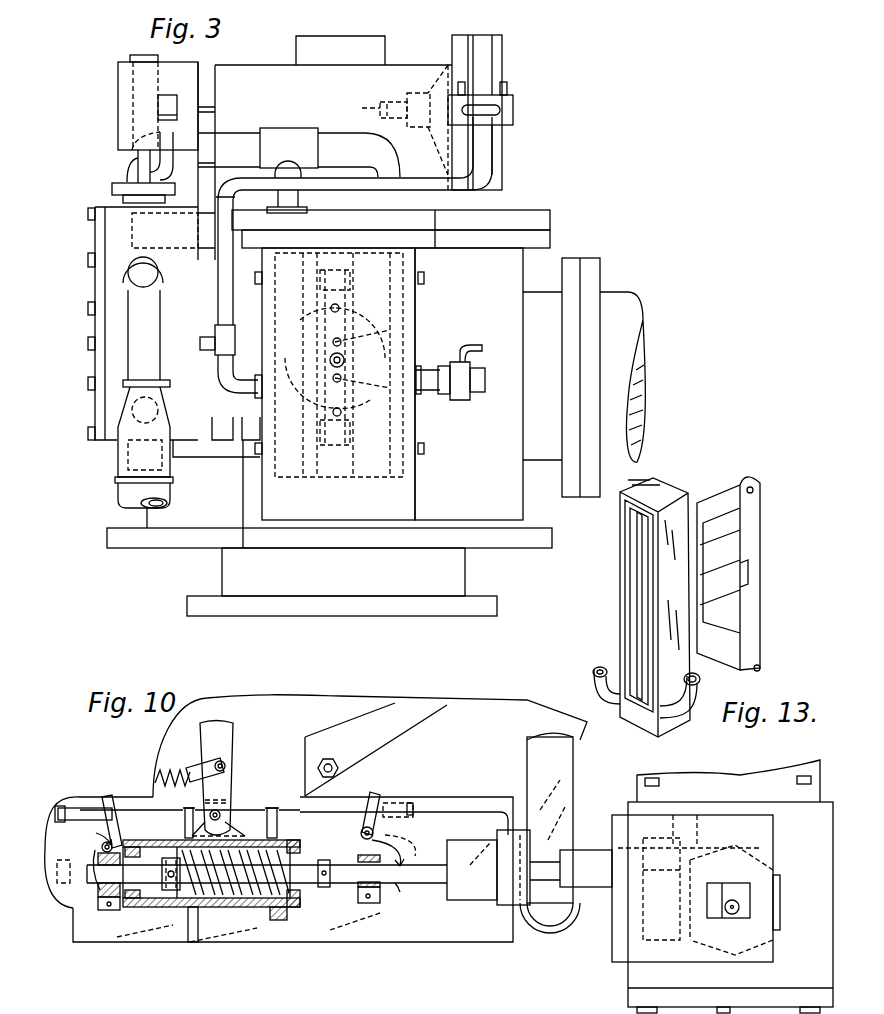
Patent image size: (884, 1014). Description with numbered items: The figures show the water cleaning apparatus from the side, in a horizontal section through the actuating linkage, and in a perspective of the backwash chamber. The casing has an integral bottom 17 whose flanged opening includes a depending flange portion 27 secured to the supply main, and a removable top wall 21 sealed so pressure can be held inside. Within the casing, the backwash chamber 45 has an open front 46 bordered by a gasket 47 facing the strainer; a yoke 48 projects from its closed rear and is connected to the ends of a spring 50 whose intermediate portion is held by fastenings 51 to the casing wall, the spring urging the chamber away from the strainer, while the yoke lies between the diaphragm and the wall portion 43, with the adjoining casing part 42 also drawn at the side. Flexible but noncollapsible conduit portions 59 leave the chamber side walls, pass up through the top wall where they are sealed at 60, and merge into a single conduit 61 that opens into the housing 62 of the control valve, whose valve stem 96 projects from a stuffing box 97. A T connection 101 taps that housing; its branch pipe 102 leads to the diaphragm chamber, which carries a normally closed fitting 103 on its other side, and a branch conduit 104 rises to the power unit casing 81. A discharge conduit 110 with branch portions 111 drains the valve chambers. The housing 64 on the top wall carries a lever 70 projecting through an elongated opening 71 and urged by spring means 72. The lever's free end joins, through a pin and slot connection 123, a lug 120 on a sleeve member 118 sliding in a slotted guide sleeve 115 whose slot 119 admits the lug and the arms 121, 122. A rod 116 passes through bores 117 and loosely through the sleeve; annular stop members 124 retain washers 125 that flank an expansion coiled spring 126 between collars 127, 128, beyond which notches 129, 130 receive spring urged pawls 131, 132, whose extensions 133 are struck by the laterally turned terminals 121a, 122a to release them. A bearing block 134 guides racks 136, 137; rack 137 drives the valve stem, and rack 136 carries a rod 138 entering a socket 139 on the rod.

In FIG. 3, the bottom 17 is at (329, 538).
In FIG. 10, the top wall 21 is at (279, 839).
In FIG. 3, the depending flange portion 27 is at (342, 582).
In FIG. 3, the wheel 42 is at (584, 377).
In FIG. 3, the wall portion 43 is at (391, 369).
In FIG. 13, the backwash chamber 45 is at (640, 585).
In FIG. 13, the open front 46 is at (632, 625).
In FIG. 13, the gasket 47 is at (626, 538).
In FIG. 3, the yoke 48 is at (339, 365).
In FIG. 13, the yoke 48 is at (712, 532).
In FIG. 3, the spring 50 is at (346, 365).
In FIG. 3, the fastenings 51 is at (337, 360).
In FIG. 3, the conduit portions 59 is at (283, 197).
In FIG. 13, the conduit portions 59 is at (592, 683).
In FIG. 3, the sealed connection 60 is at (305, 208).
In FIG. 3, the conduit 61 is at (299, 152).
In FIG. 10, the conduit 61 is at (573, 806).
In FIG. 3, the housing 62 is at (113, 276).
In FIG. 10, the housing 62 is at (634, 981).
In FIG. 3, the housing 64 is at (239, 75).
In FIG. 10, the housing 64 is at (350, 737).
In FIG. 10, the lever 70 is at (235, 766).
In FIG. 10, the opening 71 is at (308, 740).
In FIG. 10, the spring means 72 is at (157, 780).
In FIG. 3, the power unit casing 81 is at (510, 78).
In FIG. 3, the valve stem 96 is at (138, 166).
In FIG. 3, the stuffing box 97 is at (122, 200).
In FIG. 10, the stuffing box 97 is at (783, 905).
In FIG. 3, the T connection 101 is at (234, 334).
In FIG. 3, the branch pipe 102 is at (230, 392).
In FIG. 3, the fitting 103 is at (455, 397).
In FIG. 3, the branch conduit 104 is at (490, 163).
In FIG. 3, the discharge conduit 110 is at (152, 333).
In FIG. 3, the branch portions 111 is at (160, 280).
In FIG. 10, the sleeve 115 is at (235, 891).
In FIG. 10, the rod 116 is at (392, 883).
In FIG. 10, the bores 117 is at (105, 920).
In FIG. 10, the sleeve member 118 is at (287, 940).
In FIG. 10, the slot 119 is at (232, 818).
In FIG. 10, the lug 120 is at (233, 808).
In FIG. 10, the arm 121 is at (190, 808).
In FIG. 10, the laterally turned terminal 121a is at (75, 802).
In FIG. 10, the arm 122 is at (353, 851).
In FIG. 10, the laterally turned terminal 122a is at (390, 803).
In FIG. 10, the pin and slot connection 123 is at (218, 810).
In FIG. 10, the annular stop members 124 is at (124, 905).
In FIG. 10, the washers 125 is at (170, 900).
In FIG. 10, the expansion coiled spring 126 is at (211, 884).
In FIG. 10, the collar 127 is at (165, 873).
In FIG. 10, the collar 128 is at (357, 858).
In FIG. 10, the notch 129 is at (108, 899).
In FIG. 10, the notch 130 is at (323, 872).
In FIG. 10, the pawl 131 is at (97, 856).
In FIG. 10, the pawl 132 is at (404, 843).
In FIG. 10, the extensions 133 is at (110, 797).
In FIG. 3, the bearing block 134 is at (114, 128).
In FIG. 10, the bearing block 134 is at (600, 950).
In FIG. 3, the rack 136 is at (168, 95).
In FIG. 10, the rack 136 is at (582, 852).
In FIG. 3, the rack 137 is at (140, 56).
In FIG. 10, the rack 137 is at (742, 896).
In FIG. 10, the rod 138 is at (540, 893).
In FIG. 10, the socket 139 is at (472, 870).